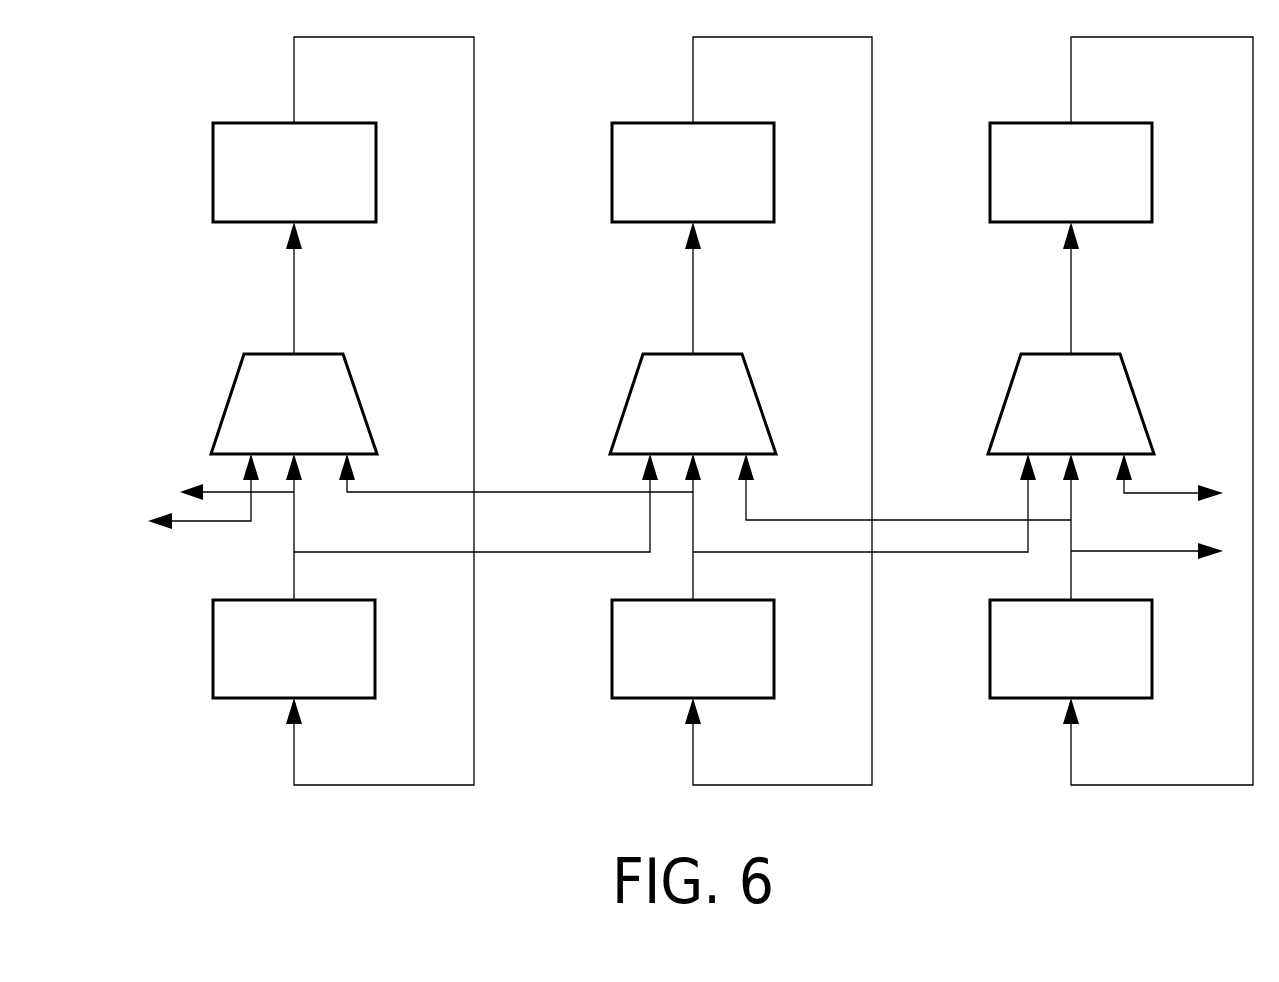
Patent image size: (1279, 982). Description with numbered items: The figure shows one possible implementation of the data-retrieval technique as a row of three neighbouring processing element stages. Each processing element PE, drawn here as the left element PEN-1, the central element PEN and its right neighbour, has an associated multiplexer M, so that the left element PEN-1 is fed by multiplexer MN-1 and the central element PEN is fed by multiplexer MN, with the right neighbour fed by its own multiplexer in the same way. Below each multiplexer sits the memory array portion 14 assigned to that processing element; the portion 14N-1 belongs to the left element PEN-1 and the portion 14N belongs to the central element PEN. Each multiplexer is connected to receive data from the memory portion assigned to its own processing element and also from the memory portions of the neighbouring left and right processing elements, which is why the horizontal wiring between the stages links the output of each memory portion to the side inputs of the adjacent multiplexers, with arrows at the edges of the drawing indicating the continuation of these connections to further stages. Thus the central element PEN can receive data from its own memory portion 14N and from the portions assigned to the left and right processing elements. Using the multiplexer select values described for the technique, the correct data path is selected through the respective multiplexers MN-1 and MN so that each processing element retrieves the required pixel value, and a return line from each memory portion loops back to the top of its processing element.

The memory array portion 14 is at (682, 649).
The memory portion assigned to the left processing element 14N-1 is at (294, 649).
The own memory portion of processing element N 14N is at (693, 649).
The processing element PE is at (682, 172).
The left processing element PEN-1 is at (294, 172).
The processing element N PEN is at (693, 172).
The multiplexer M is at (682, 404).
The multiplexer of processing element N-1 MN-1 is at (294, 404).
The multiplexer of processing element N MN is at (693, 404).